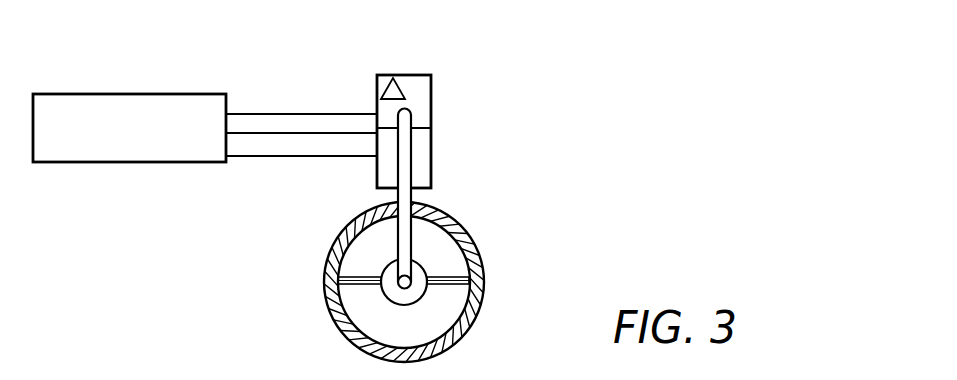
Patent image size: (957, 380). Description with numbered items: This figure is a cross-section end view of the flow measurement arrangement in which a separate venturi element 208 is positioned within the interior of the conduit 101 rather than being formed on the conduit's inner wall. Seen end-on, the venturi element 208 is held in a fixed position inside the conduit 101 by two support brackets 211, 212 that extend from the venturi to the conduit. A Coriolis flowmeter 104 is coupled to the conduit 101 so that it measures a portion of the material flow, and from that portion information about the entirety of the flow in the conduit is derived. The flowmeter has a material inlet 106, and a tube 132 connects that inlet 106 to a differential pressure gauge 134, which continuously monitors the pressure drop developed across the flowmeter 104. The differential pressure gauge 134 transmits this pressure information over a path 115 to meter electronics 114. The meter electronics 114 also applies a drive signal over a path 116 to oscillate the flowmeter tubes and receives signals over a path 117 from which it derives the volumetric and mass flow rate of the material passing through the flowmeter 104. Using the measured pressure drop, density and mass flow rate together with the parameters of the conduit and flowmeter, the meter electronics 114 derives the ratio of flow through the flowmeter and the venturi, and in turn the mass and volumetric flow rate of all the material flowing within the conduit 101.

The conduit 101 is at (482, 253).
The Coriolis flowmeter 104 is at (431, 160).
The inlet 106 is at (398, 247).
The meter electronics 114 is at (136, 162).
The path 115 is at (346, 113).
The path 116 is at (270, 134).
The path 117 is at (294, 157).
The tube 132 is at (409, 113).
The differential pressure gauge 134 is at (431, 90).
The venturi element 208 is at (371, 342).
The support bracket 211 is at (362, 285).
The support bracket 212 is at (447, 286).